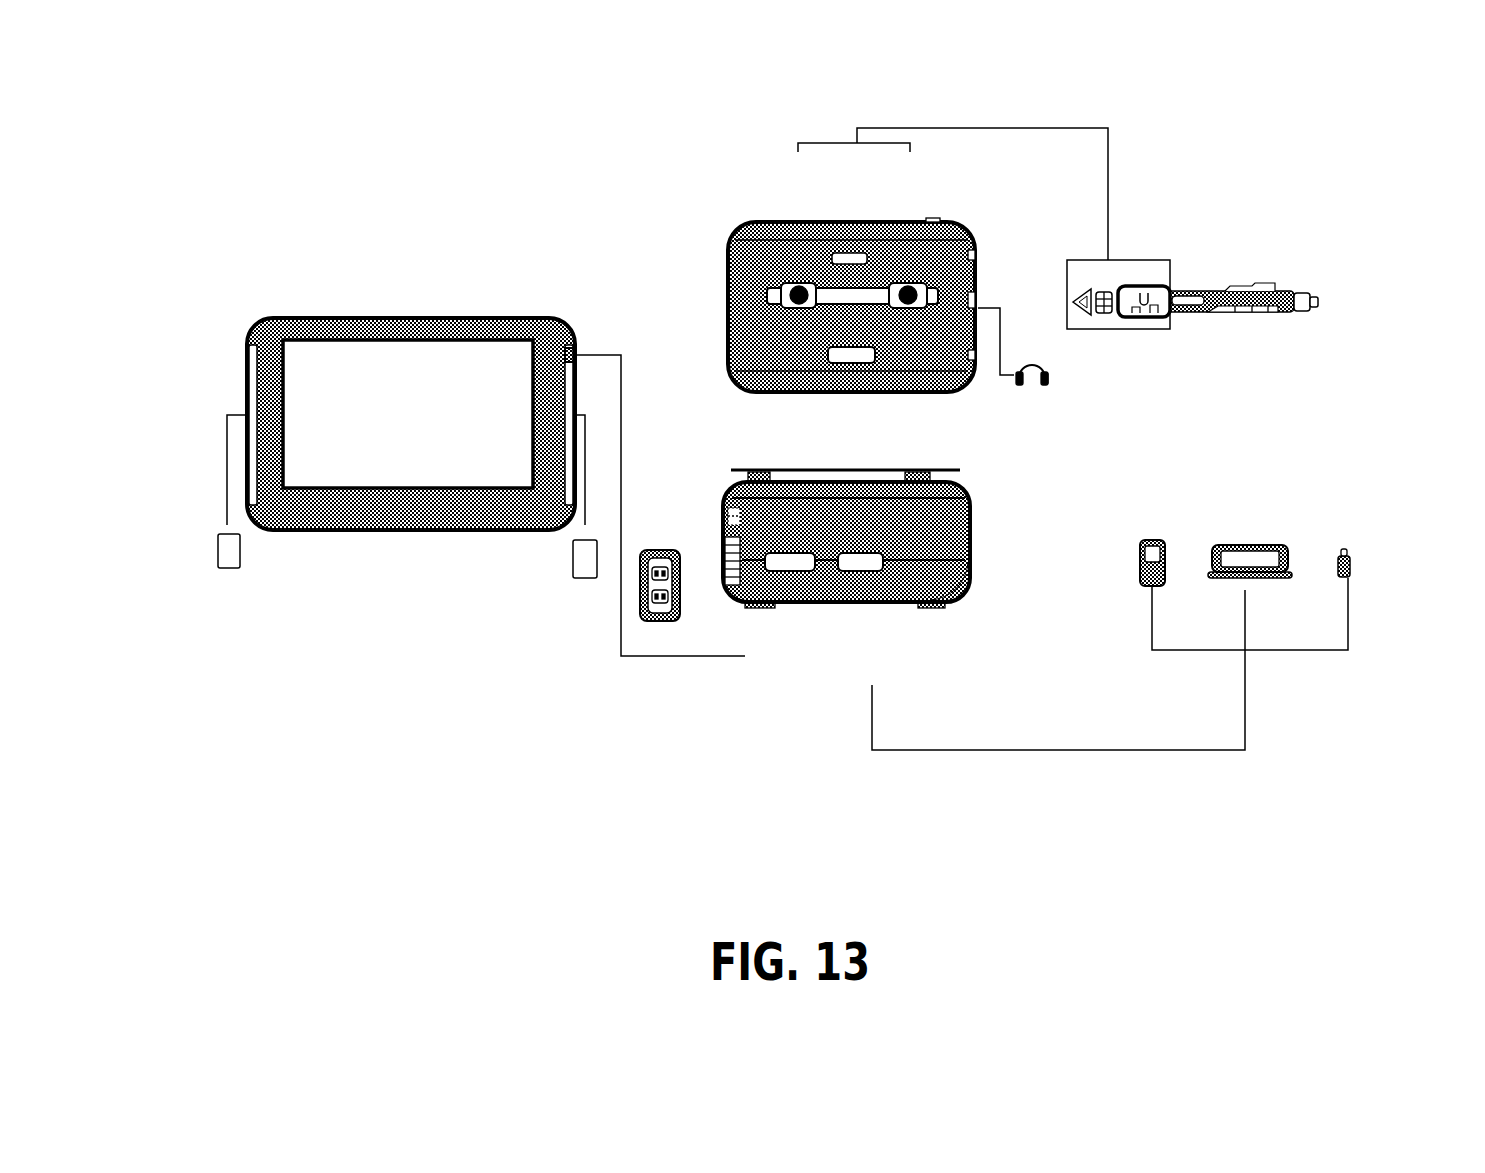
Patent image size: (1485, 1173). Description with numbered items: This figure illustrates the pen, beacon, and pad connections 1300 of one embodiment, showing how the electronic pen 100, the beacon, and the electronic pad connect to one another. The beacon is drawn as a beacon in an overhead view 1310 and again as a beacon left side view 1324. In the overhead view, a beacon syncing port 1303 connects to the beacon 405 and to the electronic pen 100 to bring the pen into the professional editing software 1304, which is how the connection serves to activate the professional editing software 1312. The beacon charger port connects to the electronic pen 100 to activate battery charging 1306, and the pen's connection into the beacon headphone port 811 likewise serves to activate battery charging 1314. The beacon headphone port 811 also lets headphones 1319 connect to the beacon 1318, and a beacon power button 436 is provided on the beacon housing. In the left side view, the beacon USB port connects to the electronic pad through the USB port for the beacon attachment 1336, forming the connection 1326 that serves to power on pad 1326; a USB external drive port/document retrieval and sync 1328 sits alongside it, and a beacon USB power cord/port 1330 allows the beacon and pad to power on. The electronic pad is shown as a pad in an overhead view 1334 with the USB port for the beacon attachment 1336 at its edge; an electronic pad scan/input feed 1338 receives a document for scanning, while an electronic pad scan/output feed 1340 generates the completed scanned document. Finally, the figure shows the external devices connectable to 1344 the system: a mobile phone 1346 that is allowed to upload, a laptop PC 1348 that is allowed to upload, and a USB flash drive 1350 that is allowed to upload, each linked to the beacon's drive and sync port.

The pen, beacon, and pad connections 1300 is at (490, 136).
The beacon in an overhead view 1310 is at (730, 222).
The activate the professional editing software 1312 is at (798, 292).
The activate battery charging 1314 is at (910, 292).
The beacon syncing port 1303 is at (795, 292).
The beacon power button 436 is at (851, 363).
The beacon headphone port 811 is at (1074, 317).
The professional editing software 1304 is at (1144, 300).
The battery charging 1306 is at (1160, 316).
The electronic pen 100 is at (1244, 279).
The beacon 1318 is at (1031, 376).
The headphones 1319 is at (1048, 379).
The pad in an overhead view 1334 is at (410, 312).
The USB port for the beacon attachment 1336 is at (570, 345).
The electronic pad scan/input feed 1338 is at (575, 560).
The electronic pad scan/output feed 1340 is at (220, 553).
The beacon left side view 1324 is at (718, 486).
The power on pad 1326 is at (792, 566).
The USB external drive port/document retrieval and sync 1328 is at (871, 566).
The beacon 405 is at (950, 578).
The beacon USB power cord/port 1330 is at (679, 551).
The external devices connectable to 1344 is at (1245, 543).
The mobile phone 1346 is at (1140, 567).
The laptop PC 1348 is at (1280, 578).
The USB flash drive 1350 is at (1352, 568).